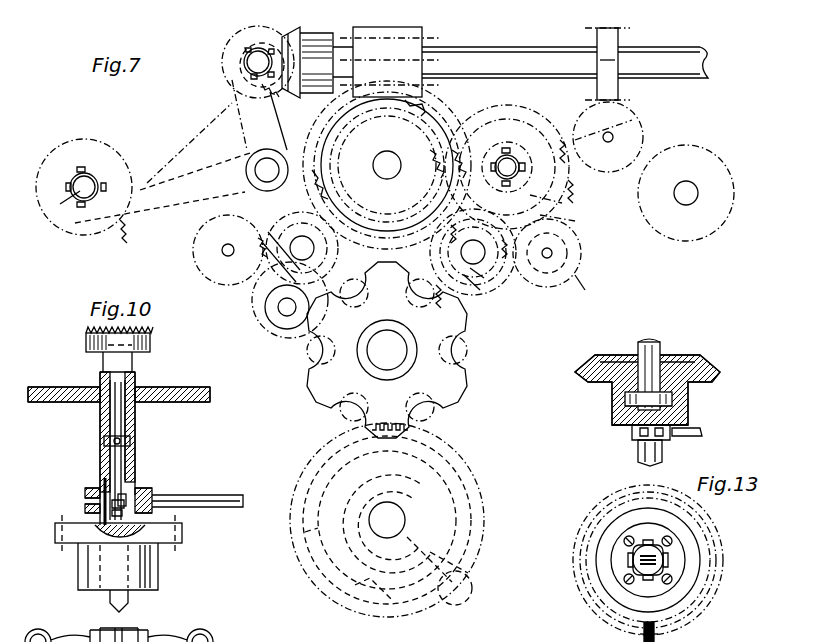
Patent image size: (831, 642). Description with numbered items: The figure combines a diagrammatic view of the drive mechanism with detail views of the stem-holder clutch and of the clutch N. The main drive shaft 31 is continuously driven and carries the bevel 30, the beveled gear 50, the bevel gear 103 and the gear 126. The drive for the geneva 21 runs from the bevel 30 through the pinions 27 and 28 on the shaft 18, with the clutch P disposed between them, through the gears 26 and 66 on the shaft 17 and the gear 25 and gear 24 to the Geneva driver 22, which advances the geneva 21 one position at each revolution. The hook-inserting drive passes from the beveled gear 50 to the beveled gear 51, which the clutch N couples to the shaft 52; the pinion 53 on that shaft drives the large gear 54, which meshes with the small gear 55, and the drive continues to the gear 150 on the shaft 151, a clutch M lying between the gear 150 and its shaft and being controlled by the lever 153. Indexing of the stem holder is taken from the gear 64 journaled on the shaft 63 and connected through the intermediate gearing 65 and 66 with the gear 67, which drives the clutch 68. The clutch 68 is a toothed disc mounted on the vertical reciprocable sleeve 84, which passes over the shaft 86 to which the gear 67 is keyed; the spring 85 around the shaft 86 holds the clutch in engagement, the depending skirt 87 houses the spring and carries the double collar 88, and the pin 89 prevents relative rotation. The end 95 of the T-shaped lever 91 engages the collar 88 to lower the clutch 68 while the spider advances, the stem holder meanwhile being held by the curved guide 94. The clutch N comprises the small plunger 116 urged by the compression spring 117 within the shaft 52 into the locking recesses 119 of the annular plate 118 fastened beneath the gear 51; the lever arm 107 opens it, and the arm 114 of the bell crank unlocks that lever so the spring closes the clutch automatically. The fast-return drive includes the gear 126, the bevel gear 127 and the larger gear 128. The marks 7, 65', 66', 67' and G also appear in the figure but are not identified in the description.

In FIG. 7, the frame 7 is at (92, 225).
In FIG. 7, the shaft 17 is at (473, 256).
In FIG. 7, the shaft 18 is at (509, 160).
In FIG. 7, the geneva 21 is at (460, 382).
In FIG. 7, the Geneva driver 22 is at (462, 585).
In FIG. 7, the gear 24 is at (470, 487).
In FIG. 7, the gear 25 is at (455, 348).
In FIG. 7, the gear 26 is at (498, 278).
In FIG. 7, the pinion 27 is at (560, 203).
In FIG. 7, the pinion 28 is at (646, 133).
In FIG. 7, the bevel 30 is at (612, 45).
In FIG. 7, the main drive shaft 31 is at (539, 50).
In FIG. 7, the beveled gear 50 is at (292, 30).
In FIG. 7, the beveled gear 51 is at (236, 40).
In FIG. 13, the beveled gear 51 is at (626, 358).
In FIG. 7, the shaft 52 is at (246, 45).
In FIG. 13, the shaft 52 is at (638, 500).
In FIG. 7, the pinion 53 is at (258, 45).
In FIG. 7, the large gear 54 is at (201, 130).
In FIG. 7, the small gear 55 is at (681, 158).
In FIG. 7, the shaft 63 is at (380, 173).
In FIG. 7, the gear 64 is at (450, 107).
In FIG. 7, the intermediate gearing 65 is at (500, 299).
In FIG. 7, the gear 66 is at (492, 308).
In FIG. 7, the gear 67 is at (580, 295).
In FIG. 10, the gear 67 is at (139, 552).
In FIG. 7, the pawl 65' is at (288, 300).
In FIG. 7, the spring 66' is at (270, 265).
In FIG. 7, the gear 67' is at (225, 258).
In FIG. 10, the clutch 68 is at (86, 338).
In FIG. 10, the vertical reciprocable sleeve 84 is at (136, 460).
In FIG. 10, the spring 85 is at (103, 510).
In FIG. 10, the shaft 86 is at (128, 604).
In FIG. 10, the depending skirt 87 is at (104, 490).
In FIG. 10, the double collar 88 is at (88, 490).
In FIG. 10, the pin 89 is at (104, 442).
In FIG. 10, the T-shaped lever 91 is at (182, 497).
In FIG. 10, the end of the cross 95 is at (152, 498).
In FIG. 7, the bevel gear 103 is at (372, 27).
In FIG. 7, the lever arm 107 is at (236, 128).
In FIG. 13, the lever arm 107 is at (700, 436).
In FIG. 7, the arm of bell crank lever 114 is at (312, 176).
In FIG. 13, the small plunger 116 is at (668, 438).
In FIG. 13, the actuating compression spring 117 is at (660, 447).
In FIG. 13, the annular plate 118 is at (682, 422).
In FIG. 13, the locking recesses 119 is at (642, 580).
In FIG. 7, the gear 126 is at (607, 30).
In FIG. 7, the bevel gear 127 is at (632, 120).
In FIG. 7, the larger gear 128 is at (556, 216).
In FIG. 7, the gear 150 is at (108, 135).
In FIG. 7, the shaft 151 is at (63, 204).
In FIG. 7, the lever 153 is at (274, 231).
In FIG. 7, the clutch N is at (255, 62).
In FIG. 13, the clutch N is at (640, 422).
In FIG. 7, the clutch M is at (88, 186).
In FIG. 7, the clutch P is at (512, 167).
In FIG. 13, the gear G is at (612, 641).
In FIG. 13, the curved guide 94 is at (656, 632).